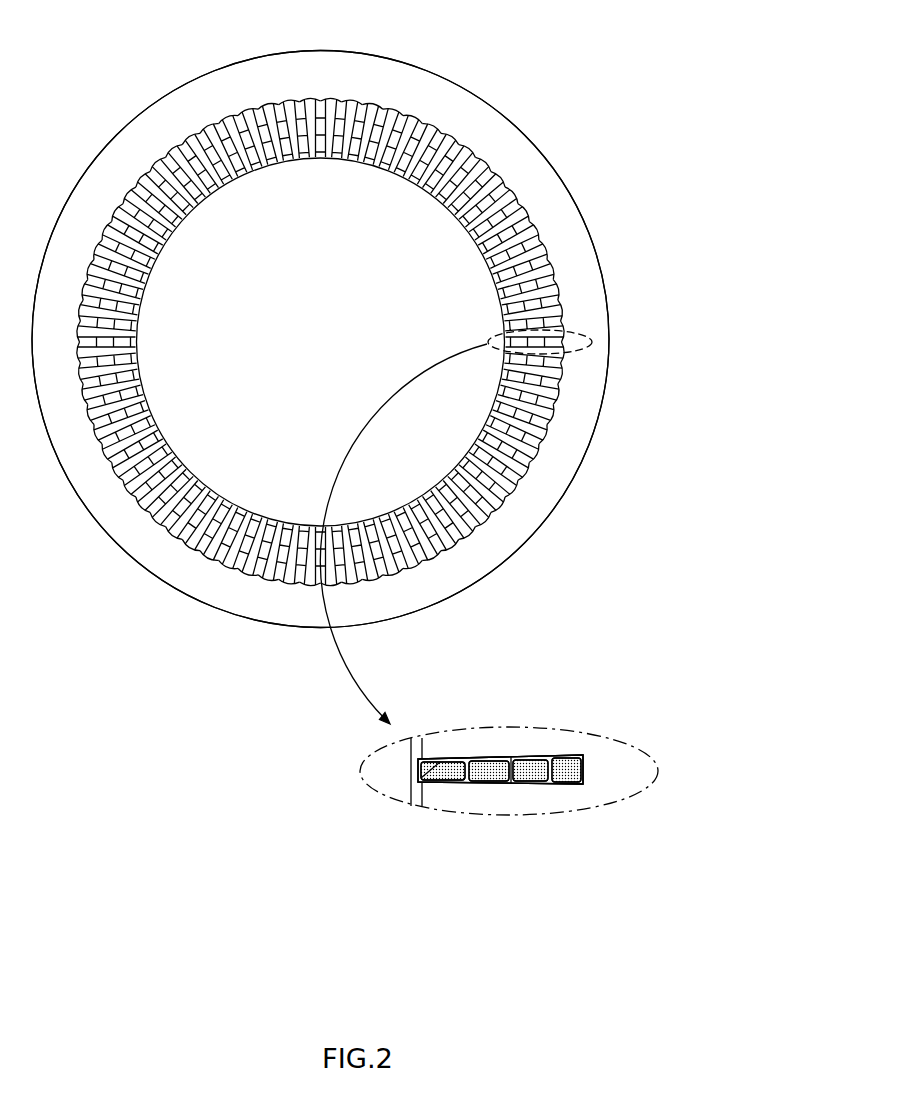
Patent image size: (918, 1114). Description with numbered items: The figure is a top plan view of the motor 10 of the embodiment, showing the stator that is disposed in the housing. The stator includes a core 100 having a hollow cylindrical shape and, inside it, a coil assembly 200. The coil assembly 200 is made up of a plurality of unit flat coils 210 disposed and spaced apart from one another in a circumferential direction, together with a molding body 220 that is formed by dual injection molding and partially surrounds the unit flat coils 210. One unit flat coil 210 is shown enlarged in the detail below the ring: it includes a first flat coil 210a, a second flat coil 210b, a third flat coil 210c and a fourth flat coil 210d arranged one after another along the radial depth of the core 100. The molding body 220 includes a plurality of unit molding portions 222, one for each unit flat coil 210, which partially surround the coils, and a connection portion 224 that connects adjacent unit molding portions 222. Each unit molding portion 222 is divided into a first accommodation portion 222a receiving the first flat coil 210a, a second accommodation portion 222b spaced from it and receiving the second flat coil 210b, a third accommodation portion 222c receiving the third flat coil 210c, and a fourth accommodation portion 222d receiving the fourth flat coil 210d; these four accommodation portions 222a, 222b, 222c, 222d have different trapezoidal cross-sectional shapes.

The motor 10 is at (72, 44).
The core 100 is at (527, 160).
The coil assembly 200 is at (500, 478).
The unit flat coil 210 is at (613, 902).
The first flat coil 210a is at (577, 735).
The second flat coil 210b is at (537, 790).
The third flat coil 210c is at (485, 790).
The fourth flat coil 210d is at (440, 790).
The molding body 220 is at (620, 640).
The unit molding portion 222 is at (557, 757).
The first accommodation portion 222a is at (597, 763).
The second accommodation portion 222b is at (512, 758).
The third accommodation portion 222c is at (470, 760).
The fourth accommodation portion 222d is at (412, 772).
The connection portion 224 is at (536, 755).